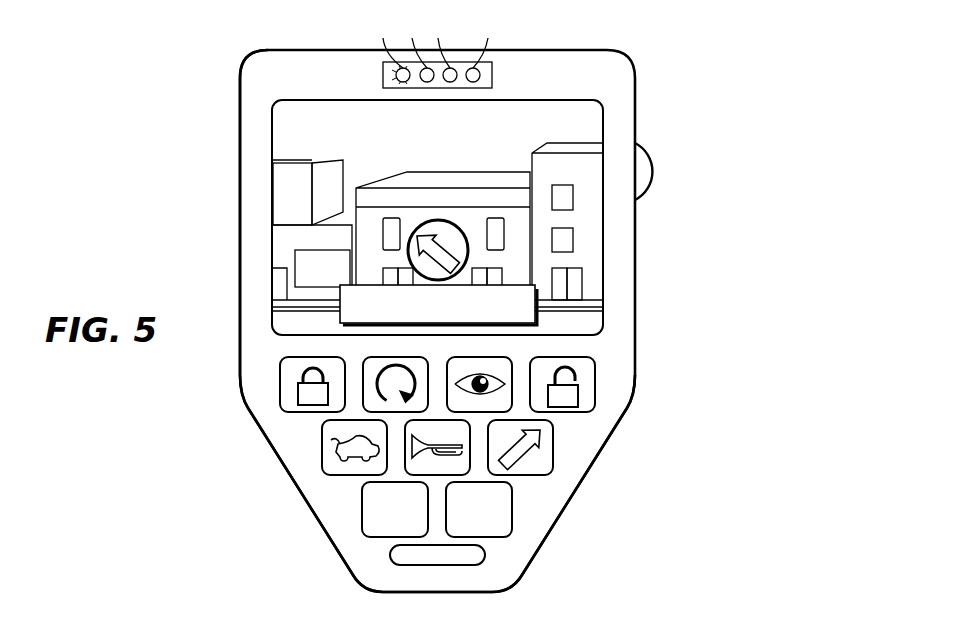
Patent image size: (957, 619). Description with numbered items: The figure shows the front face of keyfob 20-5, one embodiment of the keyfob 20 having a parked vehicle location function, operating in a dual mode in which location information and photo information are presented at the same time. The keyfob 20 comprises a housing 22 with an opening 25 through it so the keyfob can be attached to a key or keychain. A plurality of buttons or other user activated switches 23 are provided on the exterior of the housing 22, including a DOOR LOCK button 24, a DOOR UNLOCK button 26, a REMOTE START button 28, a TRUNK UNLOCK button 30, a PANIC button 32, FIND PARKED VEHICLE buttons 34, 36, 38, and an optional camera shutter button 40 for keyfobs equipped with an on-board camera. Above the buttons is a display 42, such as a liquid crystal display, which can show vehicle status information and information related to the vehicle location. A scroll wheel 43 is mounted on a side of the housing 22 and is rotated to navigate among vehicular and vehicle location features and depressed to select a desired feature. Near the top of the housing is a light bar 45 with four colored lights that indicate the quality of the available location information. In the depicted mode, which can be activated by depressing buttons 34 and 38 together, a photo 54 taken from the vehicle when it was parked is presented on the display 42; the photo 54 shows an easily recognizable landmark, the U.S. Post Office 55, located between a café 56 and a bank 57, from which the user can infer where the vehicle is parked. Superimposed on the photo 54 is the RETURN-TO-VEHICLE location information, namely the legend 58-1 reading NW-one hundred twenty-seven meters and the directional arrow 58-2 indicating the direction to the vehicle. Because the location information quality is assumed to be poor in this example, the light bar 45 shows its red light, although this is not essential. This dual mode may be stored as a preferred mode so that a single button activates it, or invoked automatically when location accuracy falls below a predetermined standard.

The keyfob 20 is at (758, 74).
The keyfob 20-5 is at (726, 246).
The housing 22 is at (240, 185).
The user activated switches 23 is at (662, 459).
The DOOR LOCK button 24 is at (278, 382).
The opening 25 is at (390, 552).
The DOOR UNLOCK button 26 is at (595, 382).
The REMOTE START button 28 is at (363, 357).
The TRUNK UNLOCK button 30 is at (322, 453).
The PANIC button 32 is at (470, 457).
The FIND PARKED VEHICLE button 34 is at (555, 448).
The FIND PARKED VEHICLE button 36 is at (362, 513).
The FIND PARKED VEHICLE button 38 is at (512, 513).
The camera shutter button 40 is at (508, 357).
The display 42 is at (322, 100).
The scroll wheel 43 is at (652, 170).
The light bar 45 is at (493, 77).
The photo 54 is at (620, 116).
The U.S. Post Office 55 is at (408, 177).
The café 56 is at (347, 235).
The bank 57 is at (545, 165).
The legend 58-1 is at (538, 305).
The directional arrow 58-2 is at (470, 257).